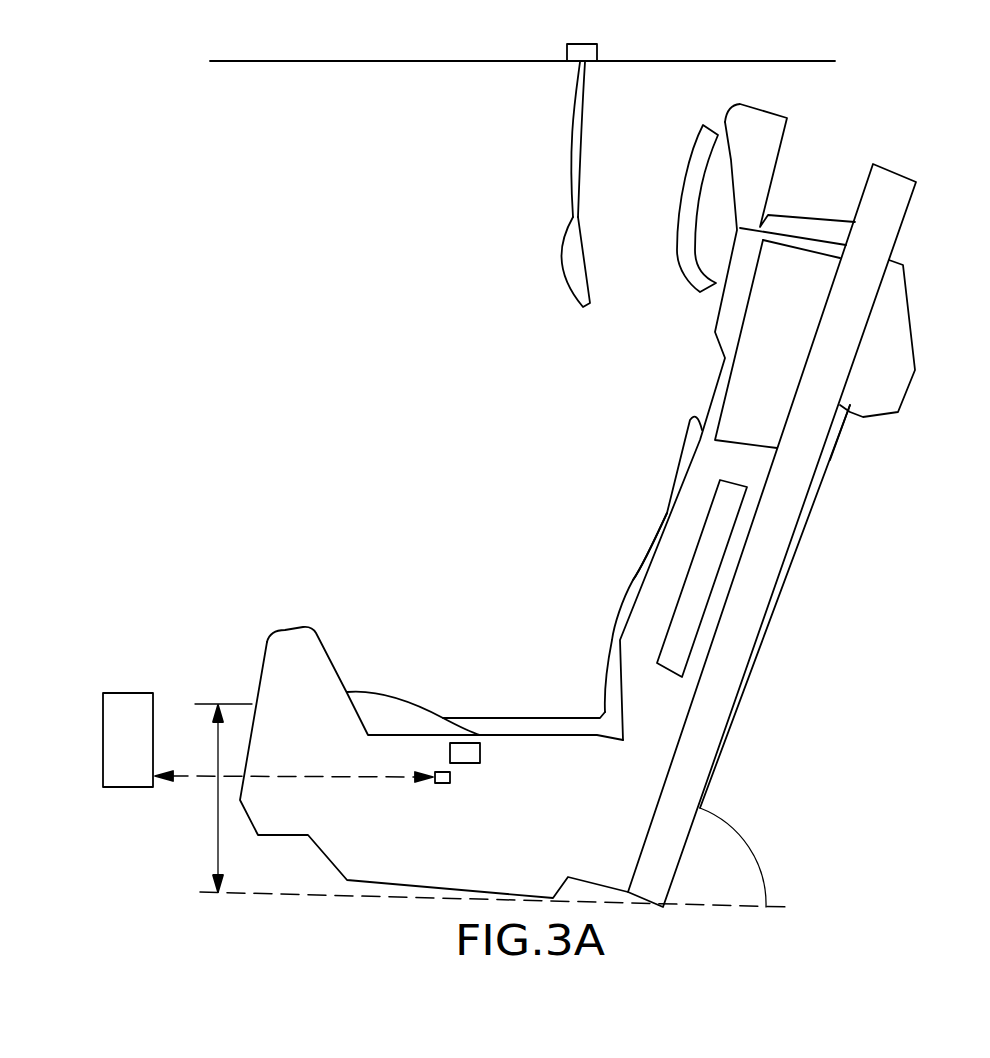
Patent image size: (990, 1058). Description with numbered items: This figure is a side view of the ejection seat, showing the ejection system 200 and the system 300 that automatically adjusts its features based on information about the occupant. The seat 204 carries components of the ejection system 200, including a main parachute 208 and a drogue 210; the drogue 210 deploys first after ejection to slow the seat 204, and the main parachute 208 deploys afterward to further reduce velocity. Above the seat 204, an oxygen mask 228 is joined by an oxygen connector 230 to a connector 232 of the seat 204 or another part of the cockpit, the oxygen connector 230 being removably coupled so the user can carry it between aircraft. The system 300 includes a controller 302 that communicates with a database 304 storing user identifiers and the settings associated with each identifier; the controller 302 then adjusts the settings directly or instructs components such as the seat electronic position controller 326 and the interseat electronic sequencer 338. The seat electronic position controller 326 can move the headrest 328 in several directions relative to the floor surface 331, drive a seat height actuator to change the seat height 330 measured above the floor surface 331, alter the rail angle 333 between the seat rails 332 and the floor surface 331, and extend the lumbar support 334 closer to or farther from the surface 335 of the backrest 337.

The ejection system 200 is at (318, 605).
The seat 204 is at (645, 517).
The main parachute 208 is at (778, 447).
The drogue 210 is at (898, 388).
The oxygen mask 228 is at (573, 205).
The oxygen connector 230 is at (580, 65).
The connector 232 is at (572, 54).
The system 300 is at (305, 502).
The controller 302 is at (443, 783).
The database 304 is at (130, 787).
The seat electronic position controller 326 is at (453, 747).
The headrest 328 is at (728, 192).
The seat height 330 is at (218, 857).
The floor surface 331 is at (337, 893).
The seat rails 332 is at (743, 677).
The rail angle 333 is at (760, 858).
The lumbar support 334 is at (633, 580).
The surface 335 is at (780, 603).
The backrest 337 is at (827, 472).
The interseat electronic sequencer 338 is at (989, 670).